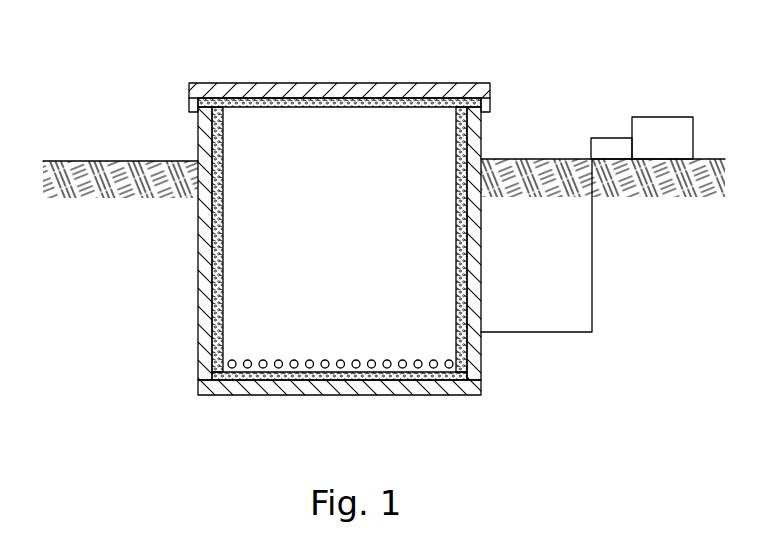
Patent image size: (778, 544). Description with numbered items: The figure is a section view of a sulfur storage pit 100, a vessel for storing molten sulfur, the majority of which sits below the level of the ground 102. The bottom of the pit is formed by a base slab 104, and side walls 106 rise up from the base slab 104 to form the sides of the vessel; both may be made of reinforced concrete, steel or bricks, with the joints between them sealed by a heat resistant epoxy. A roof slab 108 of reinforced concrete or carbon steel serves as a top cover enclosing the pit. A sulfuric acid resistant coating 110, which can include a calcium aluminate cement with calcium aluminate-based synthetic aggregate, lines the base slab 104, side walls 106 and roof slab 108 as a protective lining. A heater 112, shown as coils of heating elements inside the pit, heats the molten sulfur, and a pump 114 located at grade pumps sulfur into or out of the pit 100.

The sulfur storage pit 100 is at (346, 228).
The ground 102 is at (110, 161).
The base slab 104 is at (285, 395).
The side walls 106 is at (198, 262).
The roof slab 108 is at (303, 83).
The sulfuric acid resistant coating 110 is at (405, 107).
The heater 112 is at (326, 360).
The pump 114 is at (660, 117).